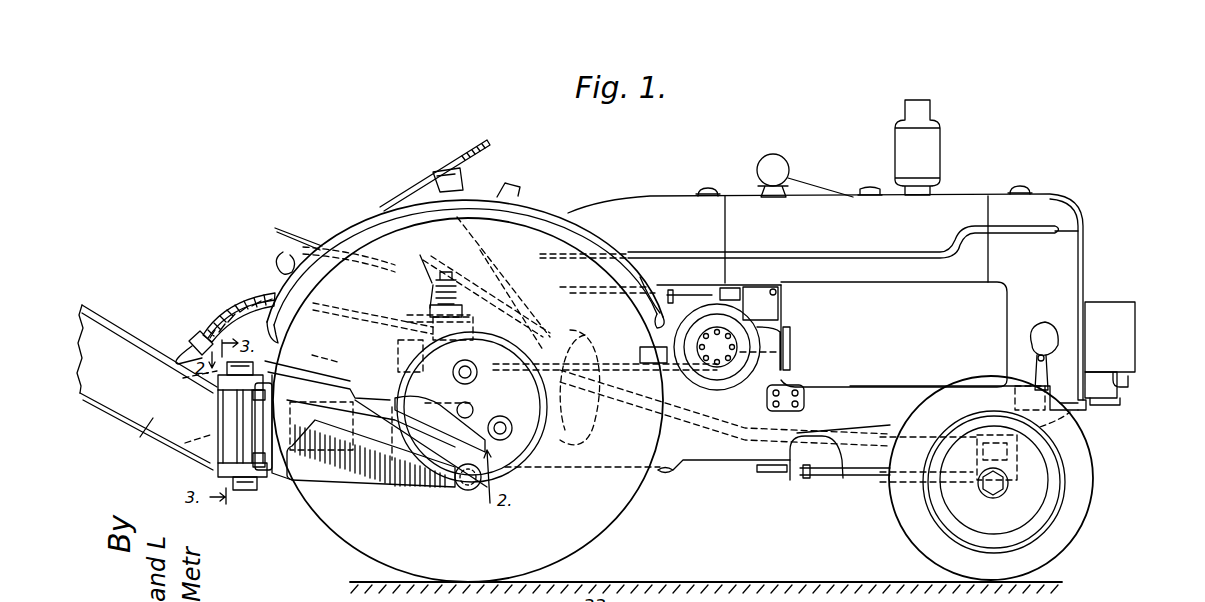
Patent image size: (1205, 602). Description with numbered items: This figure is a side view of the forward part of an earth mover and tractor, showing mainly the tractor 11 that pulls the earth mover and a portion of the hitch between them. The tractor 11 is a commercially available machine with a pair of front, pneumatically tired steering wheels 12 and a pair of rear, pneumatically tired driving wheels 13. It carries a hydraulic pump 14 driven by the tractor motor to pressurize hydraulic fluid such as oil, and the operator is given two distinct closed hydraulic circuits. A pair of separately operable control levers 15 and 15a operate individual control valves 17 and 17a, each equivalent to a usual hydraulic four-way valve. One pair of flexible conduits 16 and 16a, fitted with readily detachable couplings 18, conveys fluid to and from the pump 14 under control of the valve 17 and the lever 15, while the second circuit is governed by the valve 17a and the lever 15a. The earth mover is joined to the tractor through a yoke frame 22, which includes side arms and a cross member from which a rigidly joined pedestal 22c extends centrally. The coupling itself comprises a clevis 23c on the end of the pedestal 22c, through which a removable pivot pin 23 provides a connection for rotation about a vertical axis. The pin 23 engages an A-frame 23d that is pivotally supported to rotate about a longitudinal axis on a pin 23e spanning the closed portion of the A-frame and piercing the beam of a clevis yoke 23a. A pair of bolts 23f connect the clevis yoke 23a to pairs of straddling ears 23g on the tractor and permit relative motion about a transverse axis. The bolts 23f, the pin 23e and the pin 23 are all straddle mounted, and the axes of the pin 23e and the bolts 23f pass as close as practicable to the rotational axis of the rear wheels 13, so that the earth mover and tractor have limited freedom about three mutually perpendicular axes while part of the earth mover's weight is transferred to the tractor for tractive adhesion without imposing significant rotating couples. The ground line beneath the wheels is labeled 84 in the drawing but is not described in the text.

The tractor 11 is at (827, 290).
The front steering wheels 12 is at (1087, 493).
The rear driving wheels 13 is at (615, 518).
The hydraulic pump 14 is at (1120, 352).
The control lever 15 is at (432, 270).
The control lever 15a is at (447, 280).
The flexible conduit 16 is at (232, 305).
The flexible conduit 16a is at (262, 298).
The control valve 17 is at (1098, 401).
The control valve 17a is at (1110, 392).
The detachable couplings 18 is at (193, 342).
The yoke frame 22 is at (128, 397).
The pedestal 22c is at (141, 440).
The removable pivot pin 23 is at (366, 446).
The clevis yoke 23a is at (310, 442).
The clevis 23c is at (240, 395).
The A-frame 23d is at (302, 386).
The pin 23e is at (343, 385).
The bolts 23f is at (467, 482).
The straddling ears 23g is at (463, 448).
The ground 84 is at (760, 581).